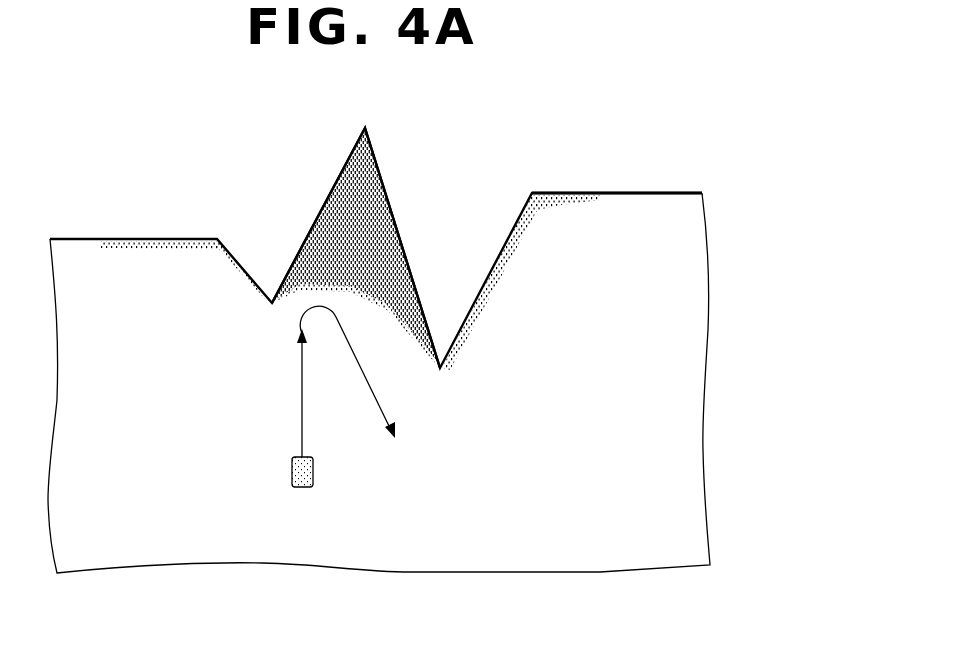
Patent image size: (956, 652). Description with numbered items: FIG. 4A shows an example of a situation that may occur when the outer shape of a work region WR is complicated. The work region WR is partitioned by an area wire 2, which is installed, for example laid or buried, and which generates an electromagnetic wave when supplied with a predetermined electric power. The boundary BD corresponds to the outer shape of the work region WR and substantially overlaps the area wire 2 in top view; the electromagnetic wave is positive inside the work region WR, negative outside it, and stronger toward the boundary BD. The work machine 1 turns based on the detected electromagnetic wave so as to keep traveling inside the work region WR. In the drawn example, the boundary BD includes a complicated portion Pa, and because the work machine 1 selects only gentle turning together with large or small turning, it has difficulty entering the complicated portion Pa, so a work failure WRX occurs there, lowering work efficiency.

The work machine 1 is at (292, 470).
The area wire 2 is at (674, 192).
The work region WR is at (678, 303).
The complicated portion Pa is at (300, 147).
The work failure WRX is at (378, 217).
The boundary BD is at (618, 185).